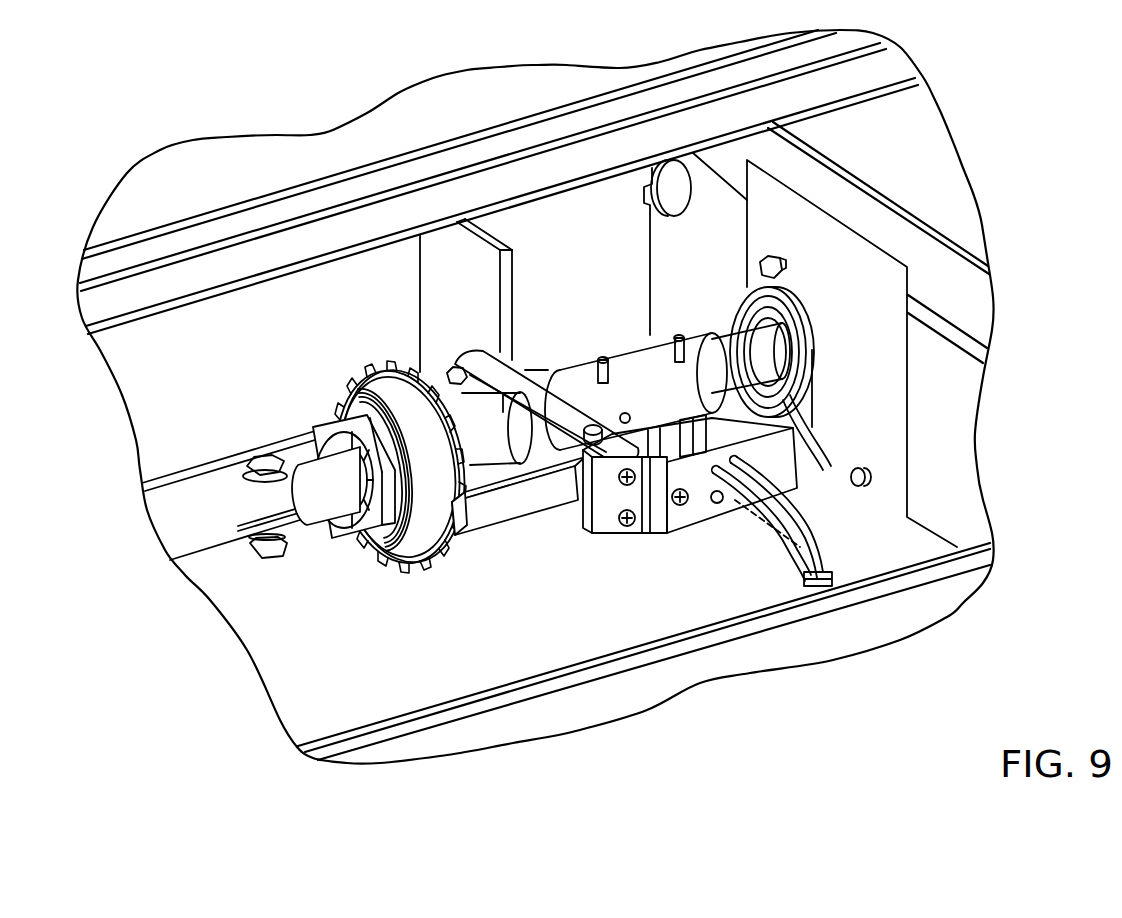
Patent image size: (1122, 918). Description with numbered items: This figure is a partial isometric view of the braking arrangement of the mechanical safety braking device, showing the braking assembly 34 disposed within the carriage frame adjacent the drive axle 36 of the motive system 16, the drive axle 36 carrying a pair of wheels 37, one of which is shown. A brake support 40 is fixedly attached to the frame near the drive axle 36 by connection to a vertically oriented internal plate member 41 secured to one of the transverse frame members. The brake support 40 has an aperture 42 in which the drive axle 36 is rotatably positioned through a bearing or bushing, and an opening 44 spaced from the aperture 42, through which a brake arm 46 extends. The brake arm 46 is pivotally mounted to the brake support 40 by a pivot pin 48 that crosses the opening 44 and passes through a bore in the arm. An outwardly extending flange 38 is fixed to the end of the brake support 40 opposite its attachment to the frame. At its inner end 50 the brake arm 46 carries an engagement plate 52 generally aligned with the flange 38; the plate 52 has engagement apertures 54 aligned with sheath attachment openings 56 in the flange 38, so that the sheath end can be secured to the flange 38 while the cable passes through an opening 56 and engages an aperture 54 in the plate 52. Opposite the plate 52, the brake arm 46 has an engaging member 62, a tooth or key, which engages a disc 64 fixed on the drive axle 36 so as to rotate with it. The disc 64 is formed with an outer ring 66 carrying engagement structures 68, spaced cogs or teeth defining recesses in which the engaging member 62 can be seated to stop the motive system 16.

The motive system 16 is at (208, 418).
The braking mechanism or assembly 34 is at (658, 553).
The drive axle 36 is at (317, 507).
The wheels 37 is at (822, 470).
The flange 38 is at (788, 470).
The brake support 40 is at (478, 358).
The internal plate member 41 is at (420, 275).
The aperture 42 is at (537, 380).
The opening 44 is at (562, 447).
The brake arm 46 is at (520, 500).
The pivot pin 48 is at (531, 435).
The inner end 50 is at (640, 433).
The engagement plate 52 is at (660, 433).
The engagement apertures 54 is at (697, 417).
The sheath attachment openings 56 is at (720, 500).
The engaging member 62 is at (393, 547).
The disc 64 is at (328, 400).
The outer periphery or ring 66 is at (348, 372).
The engagement structures 68 is at (393, 363).